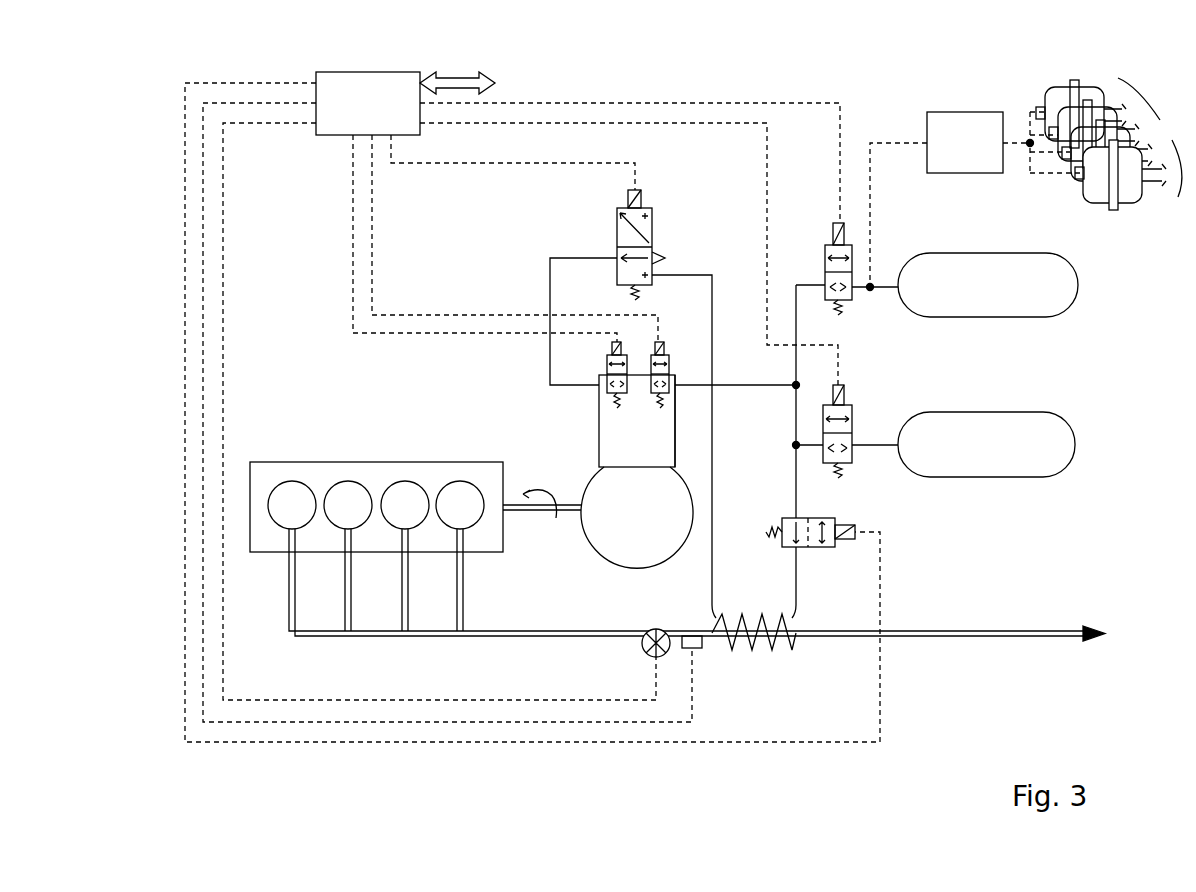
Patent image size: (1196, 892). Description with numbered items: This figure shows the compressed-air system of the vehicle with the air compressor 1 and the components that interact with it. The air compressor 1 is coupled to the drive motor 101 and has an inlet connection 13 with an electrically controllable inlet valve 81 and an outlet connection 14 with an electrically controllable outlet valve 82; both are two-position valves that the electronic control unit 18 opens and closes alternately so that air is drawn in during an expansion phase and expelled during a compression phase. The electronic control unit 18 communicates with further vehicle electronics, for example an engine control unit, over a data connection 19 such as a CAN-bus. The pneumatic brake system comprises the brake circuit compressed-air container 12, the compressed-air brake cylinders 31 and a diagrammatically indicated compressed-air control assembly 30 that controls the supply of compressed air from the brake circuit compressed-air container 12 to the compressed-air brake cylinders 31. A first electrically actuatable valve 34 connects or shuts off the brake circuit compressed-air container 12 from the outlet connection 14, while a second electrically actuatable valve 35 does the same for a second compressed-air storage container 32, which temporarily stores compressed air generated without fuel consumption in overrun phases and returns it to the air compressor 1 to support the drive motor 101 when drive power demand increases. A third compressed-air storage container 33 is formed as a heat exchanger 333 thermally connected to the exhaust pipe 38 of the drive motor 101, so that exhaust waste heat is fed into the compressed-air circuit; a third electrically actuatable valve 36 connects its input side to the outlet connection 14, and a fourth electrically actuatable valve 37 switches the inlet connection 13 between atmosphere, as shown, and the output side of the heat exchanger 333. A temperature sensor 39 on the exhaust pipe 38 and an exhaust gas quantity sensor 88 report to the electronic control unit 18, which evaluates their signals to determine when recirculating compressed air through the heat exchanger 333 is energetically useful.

The air compressor 1 is at (593, 440).
The brake circuit compressed-air container 12 is at (1078, 272).
The inlet connection 13 is at (599, 385).
The outlet connection 14 is at (675, 385).
The electronic control unit 18 is at (352, 72).
The data connection 19 is at (447, 80).
The compressed-air control assembly 30 is at (957, 112).
The compressed-air brake cylinders 31 is at (1112, 144).
The second compressed-air storage container 32 is at (1075, 448).
The third compressed-air storage container 33 is at (787, 659).
The heat exchanger 333 is at (790, 650).
The first electrically actuatable valve 34 is at (825, 255).
The second electrically actuatable valve 35 is at (852, 412).
The third electrically actuatable valve 36 is at (818, 547).
The fourth electrically actuatable valve 37 is at (617, 224).
The exhaust pipe 38 is at (522, 630).
The temperature sensor 39 is at (700, 650).
The electrically controllable inlet valve 81 is at (607, 372).
The electrically controllable outlet valve 82 is at (668, 358).
The exhaust gas quantity sensor 88 is at (643, 651).
The drive motor 101 is at (283, 462).